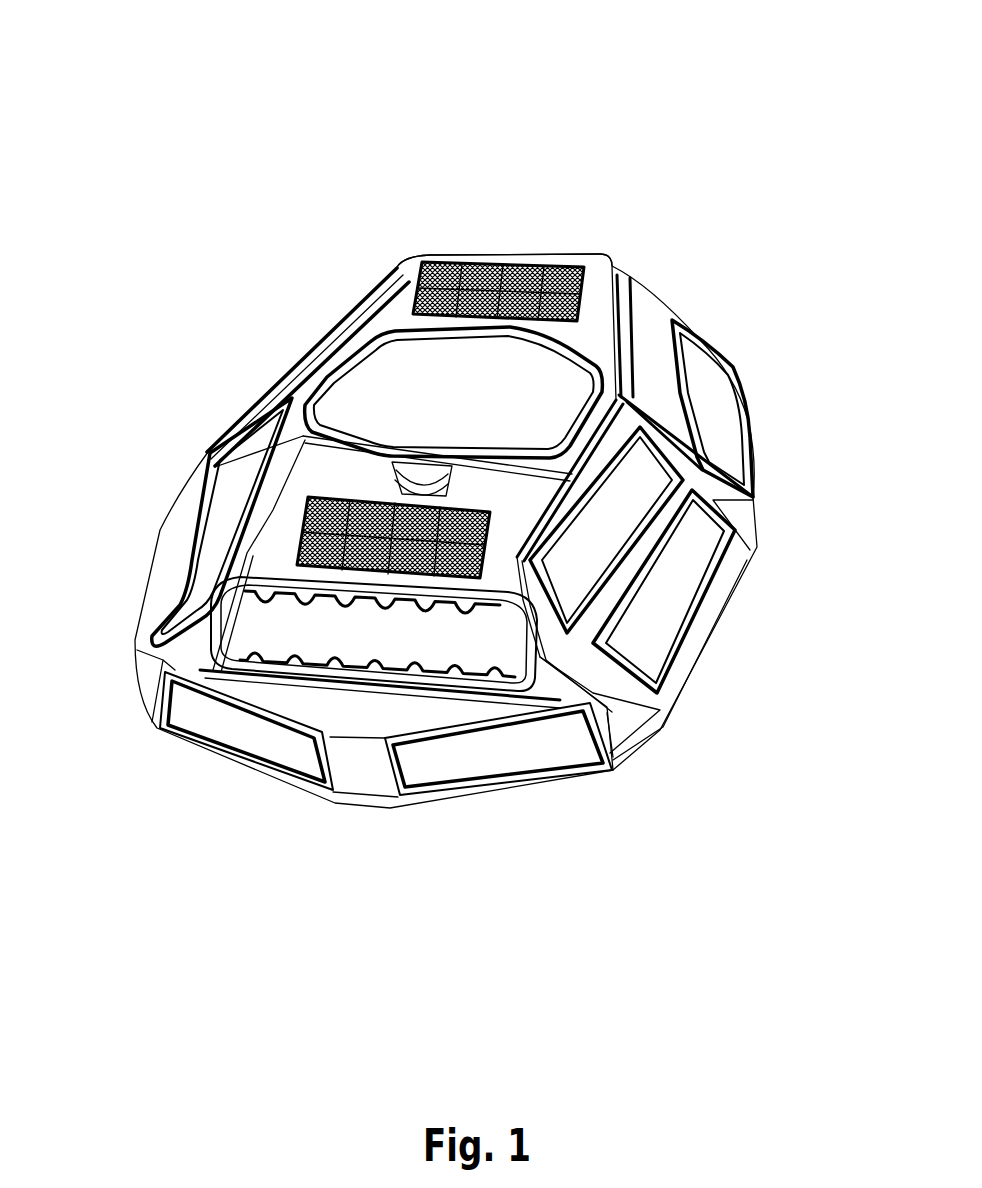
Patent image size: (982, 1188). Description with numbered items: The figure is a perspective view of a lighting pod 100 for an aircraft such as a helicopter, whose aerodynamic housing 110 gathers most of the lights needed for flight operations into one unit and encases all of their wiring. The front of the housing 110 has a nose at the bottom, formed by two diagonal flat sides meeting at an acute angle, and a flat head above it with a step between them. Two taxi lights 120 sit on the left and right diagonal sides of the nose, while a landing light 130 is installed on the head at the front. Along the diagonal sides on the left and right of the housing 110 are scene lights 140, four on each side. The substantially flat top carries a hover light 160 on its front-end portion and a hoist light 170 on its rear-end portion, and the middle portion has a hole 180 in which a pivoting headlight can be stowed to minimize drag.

The lighting pod 100 is at (727, 128).
The housing 110 is at (603, 262).
The taxi lights 120 is at (288, 752).
The landing light 130 is at (232, 648).
The scene lights 140 is at (710, 383).
The hover light 160 is at (300, 565).
The hoist light 170 is at (467, 263).
The opening 180 is at (380, 362).